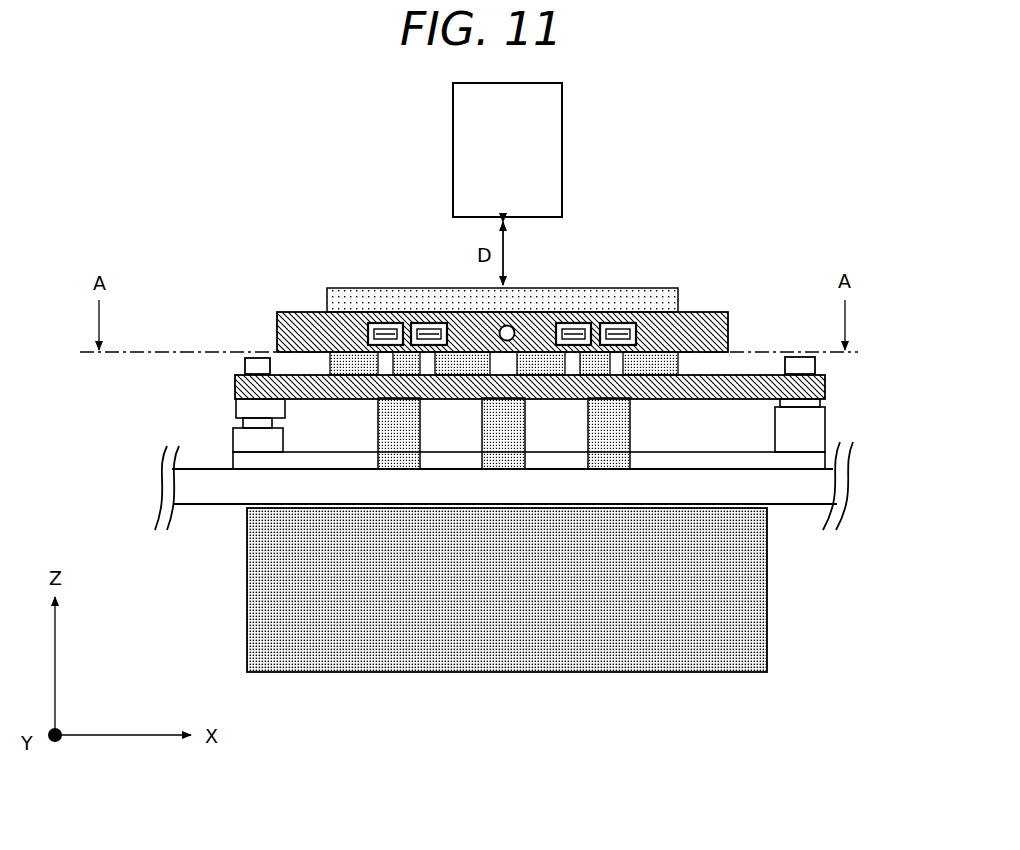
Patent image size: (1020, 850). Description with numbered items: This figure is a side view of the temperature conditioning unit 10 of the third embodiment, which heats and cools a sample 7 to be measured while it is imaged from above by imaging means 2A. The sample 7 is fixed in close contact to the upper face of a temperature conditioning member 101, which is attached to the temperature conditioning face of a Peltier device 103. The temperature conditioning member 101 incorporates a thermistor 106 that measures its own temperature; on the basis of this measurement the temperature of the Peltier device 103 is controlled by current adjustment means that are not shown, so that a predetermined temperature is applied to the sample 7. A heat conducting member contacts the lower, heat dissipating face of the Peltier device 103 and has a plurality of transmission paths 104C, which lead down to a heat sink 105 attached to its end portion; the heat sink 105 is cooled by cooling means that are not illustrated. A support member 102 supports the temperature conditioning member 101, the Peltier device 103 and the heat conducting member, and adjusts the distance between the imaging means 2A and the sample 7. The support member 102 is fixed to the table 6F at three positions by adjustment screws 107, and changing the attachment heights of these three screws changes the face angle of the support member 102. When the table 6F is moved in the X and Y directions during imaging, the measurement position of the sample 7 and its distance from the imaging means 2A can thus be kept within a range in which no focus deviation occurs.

The imaging means 2A is at (552, 143).
The sample 7 is at (627, 302).
The temperature conditioning unit 10 is at (377, 242).
The temperature conditioning member 101 is at (298, 313).
The support member 102 is at (235, 382).
The Peltier device 103 is at (353, 360).
The transmission paths 104C is at (400, 455).
The heat sink 105 is at (570, 663).
The thermistor 106 is at (507, 325).
The adjustment screw 107 is at (255, 358).
The table 6F is at (213, 497).